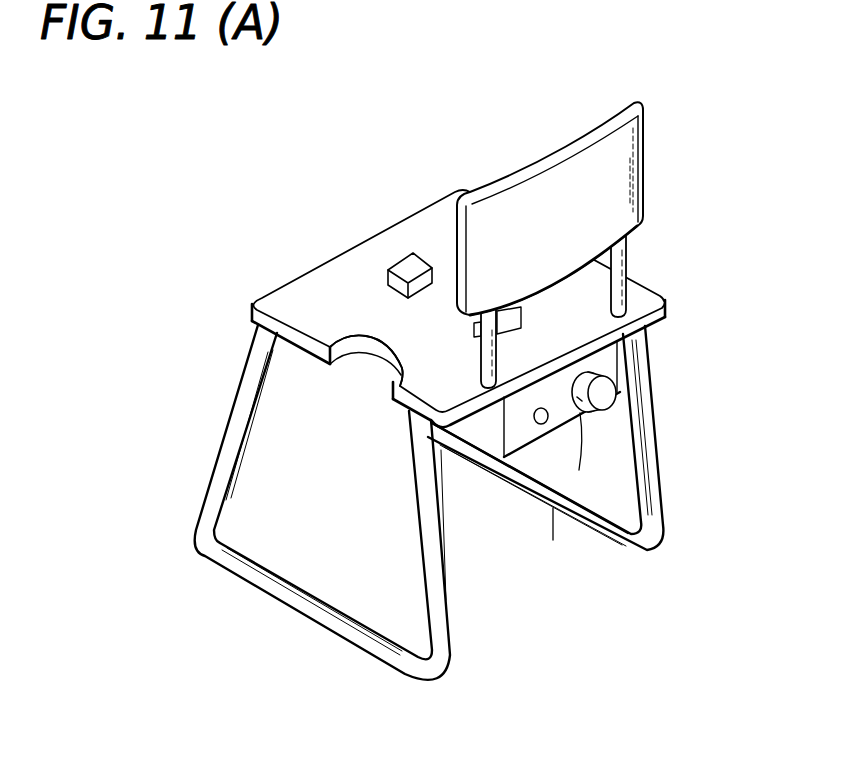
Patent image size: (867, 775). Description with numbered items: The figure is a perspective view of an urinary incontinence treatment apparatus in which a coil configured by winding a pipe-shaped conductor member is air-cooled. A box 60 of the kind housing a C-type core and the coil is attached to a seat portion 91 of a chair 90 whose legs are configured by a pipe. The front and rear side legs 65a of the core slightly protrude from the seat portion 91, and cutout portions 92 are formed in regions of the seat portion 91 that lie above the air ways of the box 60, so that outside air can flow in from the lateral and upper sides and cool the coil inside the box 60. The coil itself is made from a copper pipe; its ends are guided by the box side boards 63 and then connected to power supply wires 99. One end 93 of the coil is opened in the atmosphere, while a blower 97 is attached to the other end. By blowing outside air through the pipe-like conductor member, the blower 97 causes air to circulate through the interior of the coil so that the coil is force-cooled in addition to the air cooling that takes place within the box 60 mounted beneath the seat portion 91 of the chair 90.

The chair 90 is at (649, 348).
The seat portion 91 is at (633, 292).
The cutout portion 92 is at (356, 350).
The one end of the coil 93 is at (534, 424).
The box 60 is at (527, 454).
The lateral side board 63 is at (604, 362).
The front and rear side legs 65a is at (655, 322).
The blower 97 is at (600, 404).
The power supply wires 99 is at (579, 470).